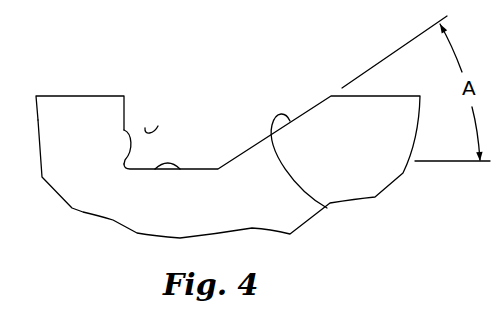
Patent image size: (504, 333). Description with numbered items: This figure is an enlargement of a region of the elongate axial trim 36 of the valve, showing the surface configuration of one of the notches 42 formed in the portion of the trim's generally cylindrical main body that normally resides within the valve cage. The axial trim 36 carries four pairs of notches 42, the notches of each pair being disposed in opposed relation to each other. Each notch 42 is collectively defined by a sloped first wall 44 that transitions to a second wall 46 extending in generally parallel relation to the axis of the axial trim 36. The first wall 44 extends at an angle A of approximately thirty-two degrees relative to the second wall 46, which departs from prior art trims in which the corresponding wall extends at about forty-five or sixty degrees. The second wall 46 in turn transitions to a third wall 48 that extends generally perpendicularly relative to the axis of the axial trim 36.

The axial trim 36 is at (76, 86).
The notch 42 is at (158, 126).
The first wall 44 is at (327, 208).
The second wall 46 is at (155, 169).
The third wall 48 is at (125, 155).